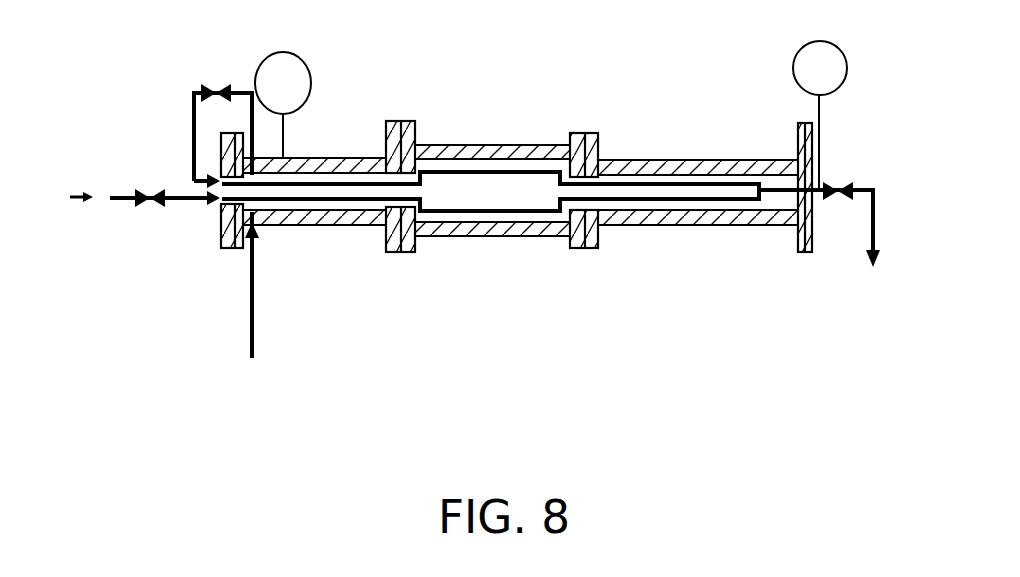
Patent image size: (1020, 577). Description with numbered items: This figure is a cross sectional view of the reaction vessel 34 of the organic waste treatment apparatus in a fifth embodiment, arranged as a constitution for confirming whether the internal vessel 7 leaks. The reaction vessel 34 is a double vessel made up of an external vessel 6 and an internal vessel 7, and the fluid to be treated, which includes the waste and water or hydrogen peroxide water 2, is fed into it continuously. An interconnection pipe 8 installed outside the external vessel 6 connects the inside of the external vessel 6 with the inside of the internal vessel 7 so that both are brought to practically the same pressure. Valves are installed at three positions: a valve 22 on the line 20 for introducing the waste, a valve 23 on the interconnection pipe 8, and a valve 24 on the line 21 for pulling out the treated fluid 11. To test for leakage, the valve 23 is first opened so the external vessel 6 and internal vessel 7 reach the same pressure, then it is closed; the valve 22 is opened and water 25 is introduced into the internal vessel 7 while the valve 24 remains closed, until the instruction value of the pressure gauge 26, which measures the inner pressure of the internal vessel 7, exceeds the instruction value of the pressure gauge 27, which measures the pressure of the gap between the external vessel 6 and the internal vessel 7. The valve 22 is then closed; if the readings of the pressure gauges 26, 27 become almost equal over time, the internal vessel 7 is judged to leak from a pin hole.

The water or hydrogen peroxide water 2 is at (250, 304).
The external vessel 6 is at (548, 238).
The internal vessel 7 is at (472, 204).
The interconnection pipe 8 is at (192, 116).
The treated fluid 11 is at (872, 280).
The line for introducing waste 20 is at (178, 203).
The line for pulling out treated fluid 21 is at (867, 183).
The valve 22 is at (147, 188).
The valve 23 is at (208, 88).
The valve 24 is at (843, 181).
The water 25 is at (65, 197).
The pressure gauge 26 is at (792, 70).
The pressure gauge 27 is at (311, 92).
The reaction vessel 34 is at (601, 32).